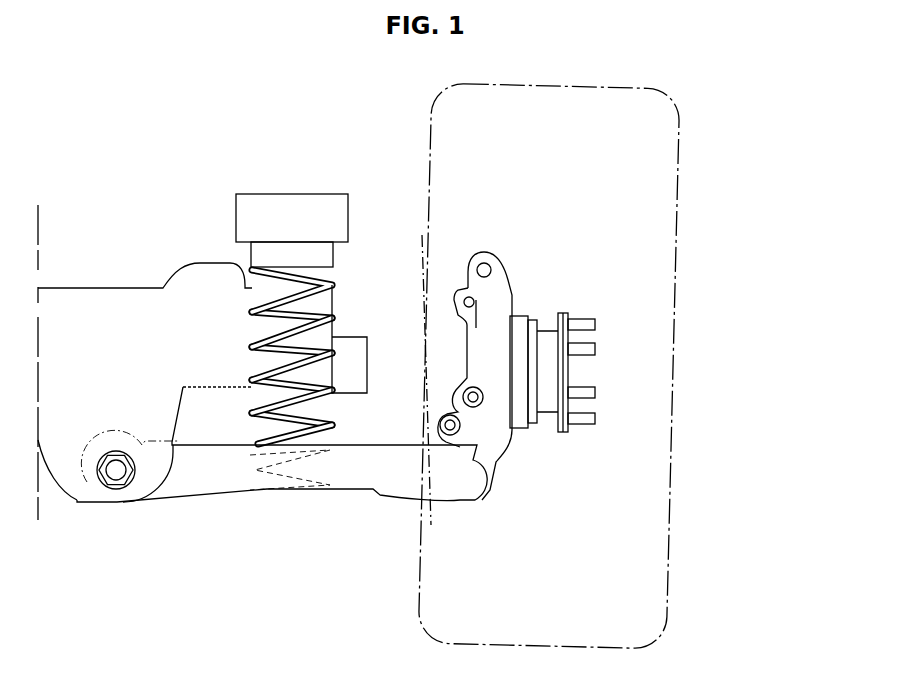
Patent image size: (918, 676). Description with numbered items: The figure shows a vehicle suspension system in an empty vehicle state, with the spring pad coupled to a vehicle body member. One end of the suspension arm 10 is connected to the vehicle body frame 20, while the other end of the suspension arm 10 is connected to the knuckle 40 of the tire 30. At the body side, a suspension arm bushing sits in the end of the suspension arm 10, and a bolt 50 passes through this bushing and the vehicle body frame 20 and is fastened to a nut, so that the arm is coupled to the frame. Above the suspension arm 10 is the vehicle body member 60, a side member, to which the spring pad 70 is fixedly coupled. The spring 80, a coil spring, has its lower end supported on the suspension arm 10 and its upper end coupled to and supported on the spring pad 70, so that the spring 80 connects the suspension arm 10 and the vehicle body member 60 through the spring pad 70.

The suspension arm 10 is at (209, 488).
The vehicle body frame 20 is at (110, 305).
The tire 30 is at (668, 205).
The knuckle 40 is at (498, 370).
The bolt 50 is at (113, 473).
The vehicle body member 60 is at (290, 202).
The spring pad 70 is at (258, 254).
The spring 80 is at (332, 318).